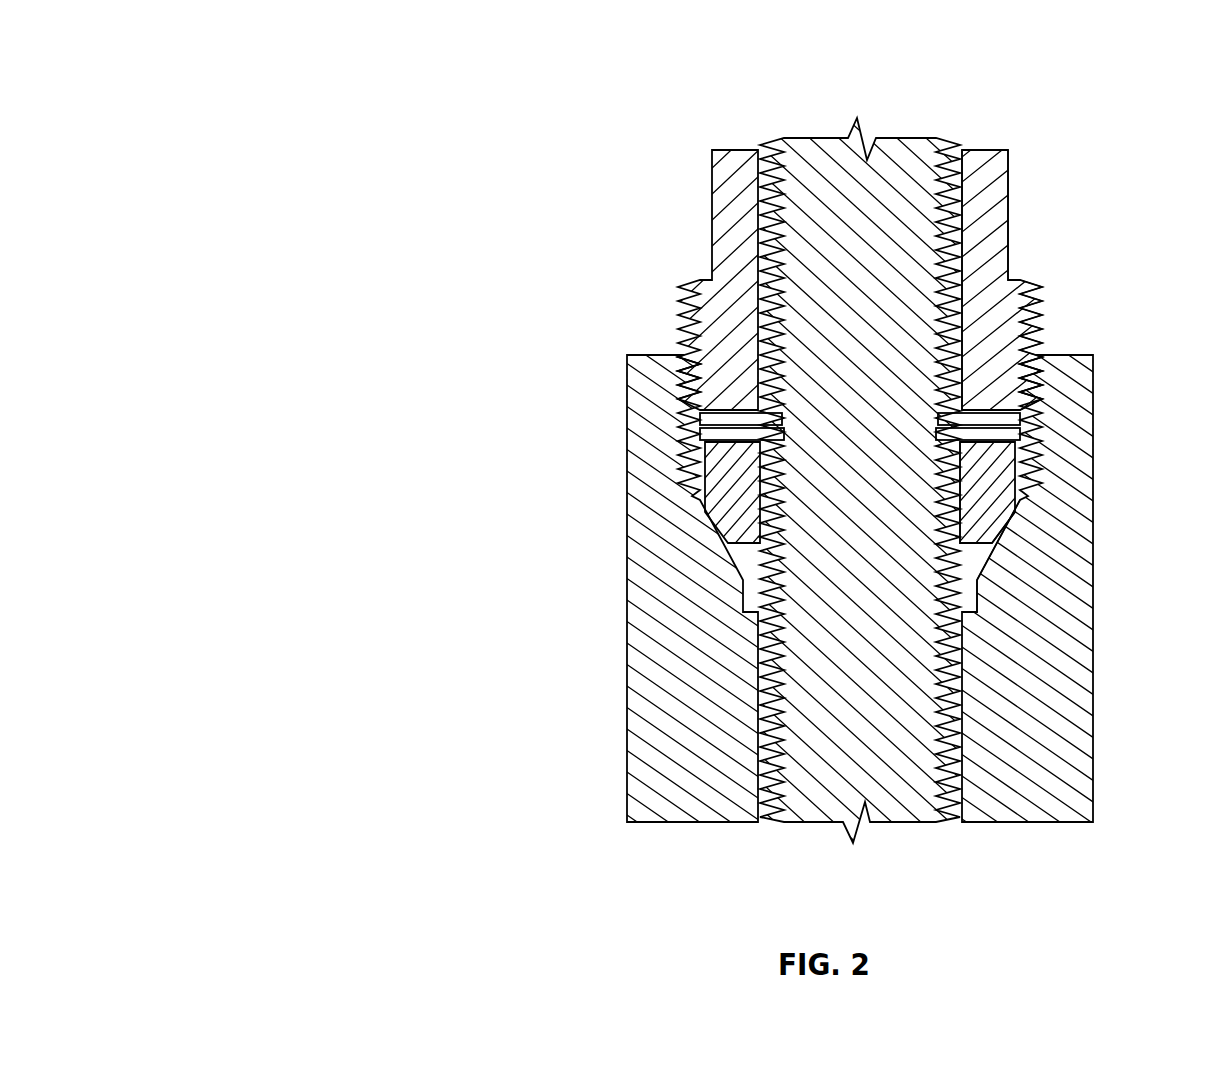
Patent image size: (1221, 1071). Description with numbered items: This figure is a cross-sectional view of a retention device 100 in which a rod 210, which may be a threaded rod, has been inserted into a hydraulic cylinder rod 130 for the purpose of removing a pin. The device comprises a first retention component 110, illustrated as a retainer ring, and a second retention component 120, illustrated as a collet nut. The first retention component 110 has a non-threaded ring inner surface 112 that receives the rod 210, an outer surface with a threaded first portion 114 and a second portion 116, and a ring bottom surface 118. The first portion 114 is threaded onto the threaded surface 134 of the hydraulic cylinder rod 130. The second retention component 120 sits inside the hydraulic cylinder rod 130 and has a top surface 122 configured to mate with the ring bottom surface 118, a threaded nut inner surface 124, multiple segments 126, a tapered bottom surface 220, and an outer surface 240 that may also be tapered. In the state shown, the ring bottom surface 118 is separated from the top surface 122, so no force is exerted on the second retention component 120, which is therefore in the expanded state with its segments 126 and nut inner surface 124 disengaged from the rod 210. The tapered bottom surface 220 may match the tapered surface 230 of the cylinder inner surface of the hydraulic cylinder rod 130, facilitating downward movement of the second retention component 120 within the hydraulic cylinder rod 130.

The retention device 100 is at (338, 76).
The first retention component 110 is at (698, 211).
The ring inner surface 112 is at (967, 213).
The first portion 114 is at (1036, 313).
The second portion 116 is at (1012, 236).
The ring bottom surface 118 is at (705, 416).
The second retention component 120 is at (686, 507).
The top surface 122 is at (1004, 440).
The nut inner surface 124 is at (1017, 497).
The segments 126 is at (1012, 499).
The hydraulic cylinder rod 130 is at (612, 699).
The threaded surface 134 is at (682, 360).
The rod 210 is at (913, 683).
The bottom surface 220 is at (1013, 537).
The tapered surface 230 is at (1020, 603).
The outer surface 240 is at (708, 449).